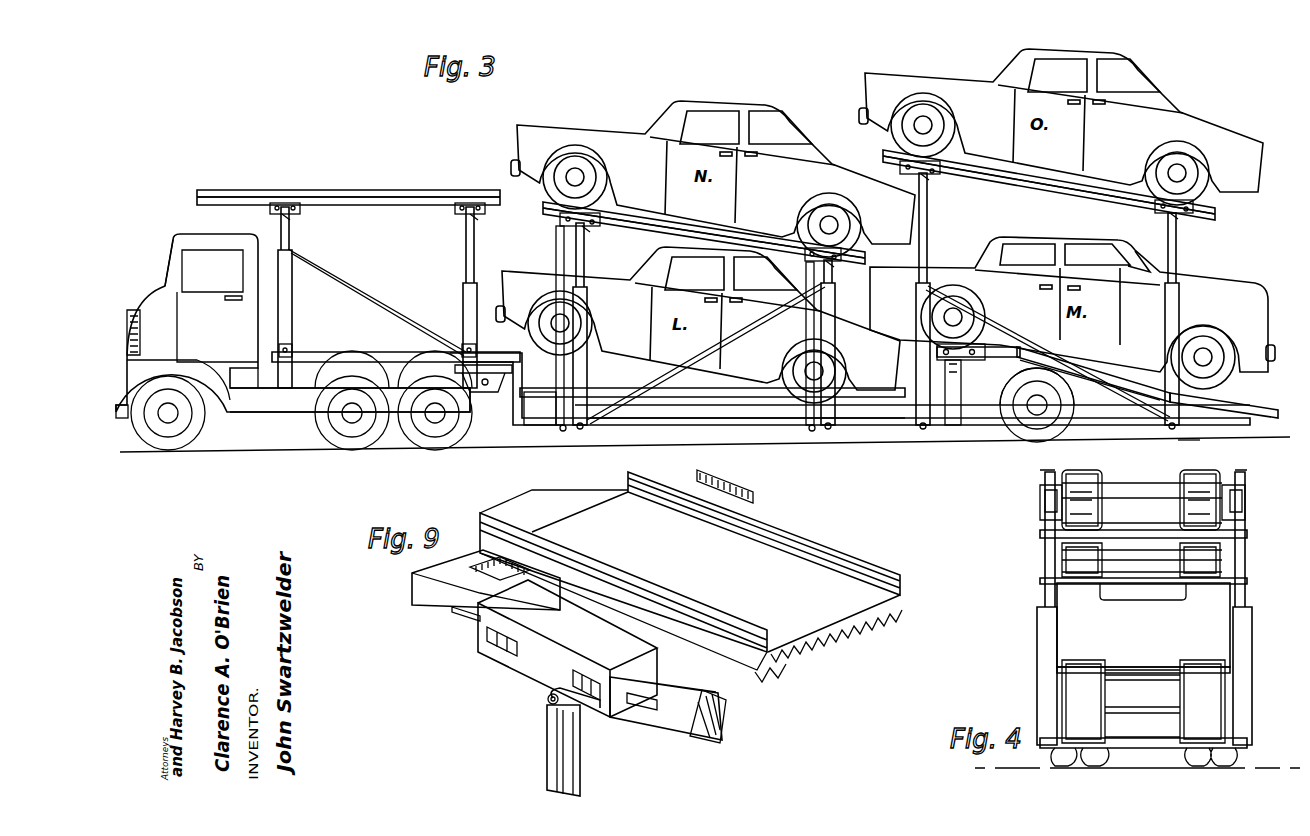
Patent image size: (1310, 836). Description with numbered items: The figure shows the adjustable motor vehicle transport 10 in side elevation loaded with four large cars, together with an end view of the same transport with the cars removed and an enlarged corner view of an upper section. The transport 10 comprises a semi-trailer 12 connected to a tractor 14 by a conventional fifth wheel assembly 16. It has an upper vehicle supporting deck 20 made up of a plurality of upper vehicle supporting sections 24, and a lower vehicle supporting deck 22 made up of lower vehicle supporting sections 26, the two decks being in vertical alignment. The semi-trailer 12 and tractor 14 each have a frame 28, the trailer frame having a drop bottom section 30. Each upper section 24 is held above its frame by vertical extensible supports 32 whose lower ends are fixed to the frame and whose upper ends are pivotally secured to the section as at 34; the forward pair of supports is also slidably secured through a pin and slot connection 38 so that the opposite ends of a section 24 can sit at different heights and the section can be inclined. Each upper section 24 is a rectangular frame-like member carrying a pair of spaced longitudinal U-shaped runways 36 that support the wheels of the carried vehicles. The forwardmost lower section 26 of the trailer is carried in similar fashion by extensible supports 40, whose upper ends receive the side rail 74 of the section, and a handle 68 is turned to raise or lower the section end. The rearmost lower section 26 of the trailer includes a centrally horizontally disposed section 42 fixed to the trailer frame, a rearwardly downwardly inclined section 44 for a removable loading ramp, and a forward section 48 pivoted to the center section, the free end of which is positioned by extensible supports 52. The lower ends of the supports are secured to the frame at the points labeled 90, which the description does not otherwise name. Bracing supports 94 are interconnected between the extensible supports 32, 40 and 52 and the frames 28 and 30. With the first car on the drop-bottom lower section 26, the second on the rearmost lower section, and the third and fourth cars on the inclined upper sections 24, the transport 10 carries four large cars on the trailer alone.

In FIG. 3, the adjustable motor vehicle transport 10 is at (328, 187).
In FIG. 4, the adjustable motor vehicle transport 10 is at (1250, 592).
In FIG. 3, the semi-trailer 12 is at (620, 434).
In FIG. 4, the semi-trailer 12 is at (1252, 709).
In FIG. 3, the tractor 14 is at (213, 230).
In FIG. 4, the tractor 14 is at (1220, 634).
In FIG. 3, the fifth wheel assembly 16 is at (490, 392).
In FIG. 3, the upper vehicle supporting deck 20 is at (463, 185).
In FIG. 4, the lower vehicle supporting deck 22 is at (1150, 665).
In FIG. 3, the upper vehicle supporting section 24 is at (402, 195).
In FIG. 9, the upper vehicle supporting section 24 is at (433, 610).
In FIG. 4, the upper vehicle supporting section 24 is at (1122, 475).
In FIG. 3, the lower vehicle supporting section 26 is at (370, 353).
In FIG. 4, the lower vehicle supporting section 26 is at (1118, 668).
In FIG. 3, the frame 28 is at (274, 403).
In FIG. 3, the drop bottom section 30 is at (694, 426).
In FIG. 3, the extensible support 32 is at (300, 277).
In FIG. 9, the extensible support 32 is at (545, 764).
In FIG. 4, the extensible support 32 is at (1034, 640).
In FIG. 3, the pivotal connection 34 is at (292, 212).
In FIG. 9, the pivotal connection 34 is at (548, 702).
In FIG. 9, the runway 36 is at (764, 566).
In FIG. 4, the runway 36 is at (1085, 500).
In FIG. 3, the pin and slot connection 38 is at (283, 200).
In FIG. 9, the pin and slot connection 38 is at (505, 668).
In FIG. 3, the extensible support 40 is at (556, 405).
In FIG. 3, the centrally horizontally disposed section 42 is at (1066, 354).
In FIG. 3, the rearwardly downwardly inclined section 44 is at (1236, 402).
In FIG. 3, the forward section 48 is at (986, 358).
In FIG. 3, the extensible support 52 is at (962, 420).
In FIG. 3, the handle 68 is at (560, 430).
In FIG. 3, the side rail 74 is at (393, 203).
In FIG. 9, the side rail 74 is at (685, 724).
In FIG. 4, the side rail 74 is at (1045, 502).
In FIG. 3, the post base bracket 90 is at (288, 348).
In FIG. 4, the post base bracket 90 is at (1194, 440).
In FIG. 3, the bracing support 94 is at (366, 298).